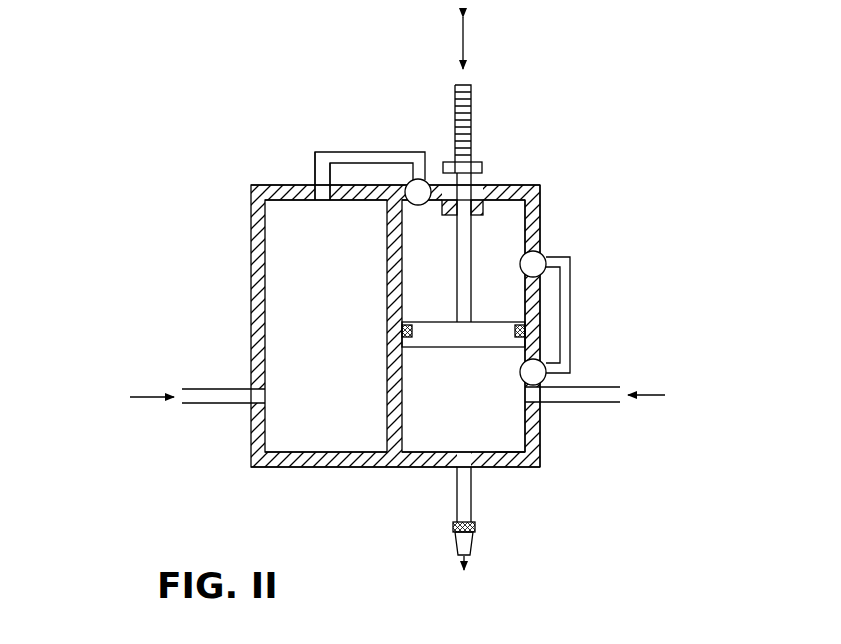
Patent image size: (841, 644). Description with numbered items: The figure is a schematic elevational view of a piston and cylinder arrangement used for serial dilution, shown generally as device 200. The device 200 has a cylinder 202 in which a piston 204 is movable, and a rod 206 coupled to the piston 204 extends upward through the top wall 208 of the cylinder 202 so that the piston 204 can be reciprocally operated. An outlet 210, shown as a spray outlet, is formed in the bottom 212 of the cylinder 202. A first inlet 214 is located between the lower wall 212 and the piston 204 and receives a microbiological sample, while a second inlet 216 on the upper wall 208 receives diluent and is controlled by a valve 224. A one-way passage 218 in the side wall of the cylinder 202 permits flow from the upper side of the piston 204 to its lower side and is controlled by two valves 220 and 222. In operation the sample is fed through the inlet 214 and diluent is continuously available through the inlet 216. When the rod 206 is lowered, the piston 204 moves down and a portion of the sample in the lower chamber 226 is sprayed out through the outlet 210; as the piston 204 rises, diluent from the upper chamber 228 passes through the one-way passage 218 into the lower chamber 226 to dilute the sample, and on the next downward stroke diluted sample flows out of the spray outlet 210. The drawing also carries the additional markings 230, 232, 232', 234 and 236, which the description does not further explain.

The device 200 is at (221, 176).
The cylinder 202 is at (543, 224).
The piston 204 is at (446, 342).
The rod 206 is at (460, 292).
The top wall 208 is at (499, 193).
The outlet 210 is at (456, 498).
The bottom 212 is at (404, 470).
The first inlet 214 is at (590, 404).
The second inlet 216 is at (421, 155).
The one-way passage 218 is at (571, 315).
The valve 220 is at (546, 257).
The valve 222 is at (546, 380).
The valve 224 is at (419, 206).
The lower chamber 226 is at (508, 468).
The upper chamber 228 is at (512, 216).
The diluent reservoir 230 is at (278, 294).
The conduit leg 232 is at (297, 160).
The diluent inlet conduit 232' is at (146, 419).
The threaded adjusting rod 234 is at (468, 111).
The nut 236 is at (480, 164).